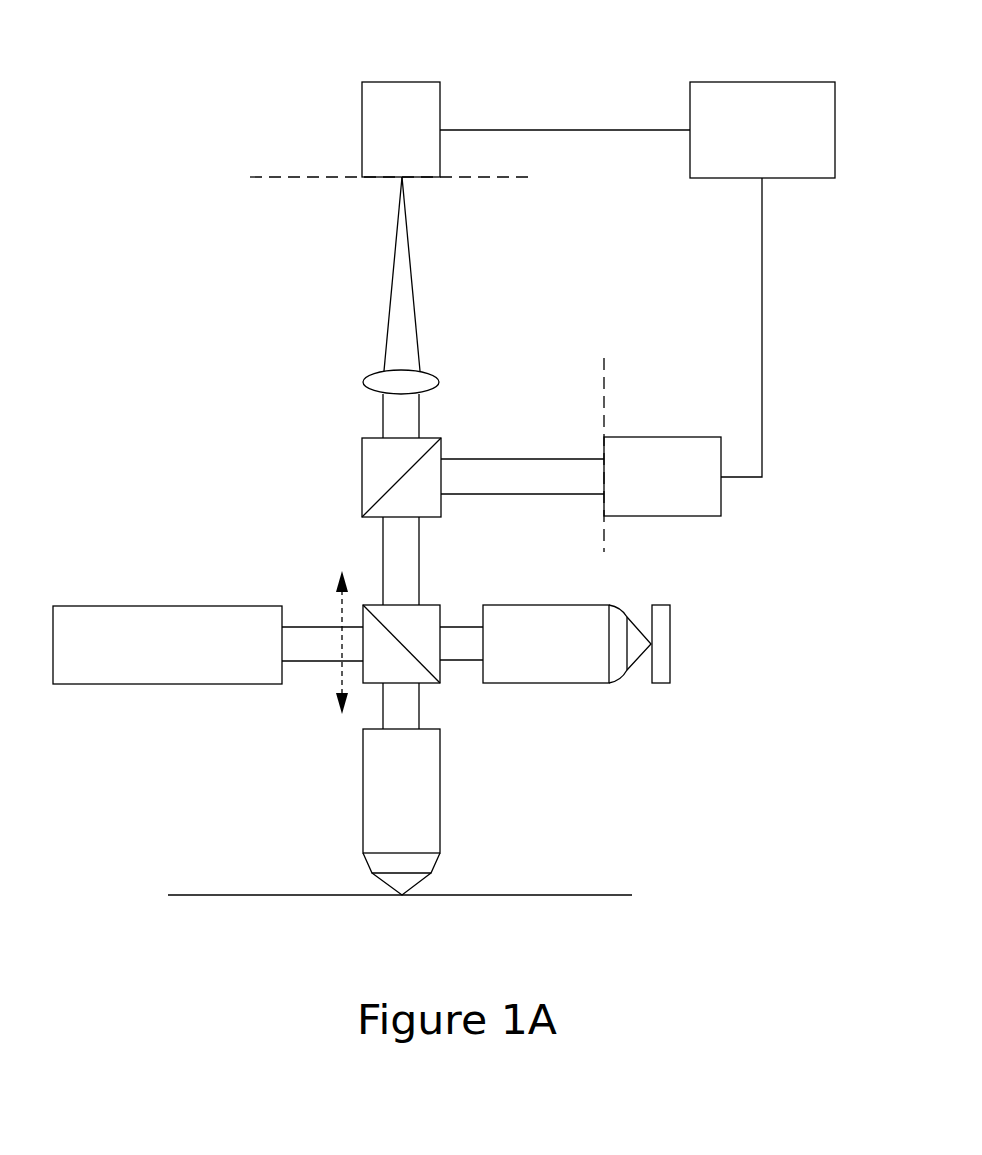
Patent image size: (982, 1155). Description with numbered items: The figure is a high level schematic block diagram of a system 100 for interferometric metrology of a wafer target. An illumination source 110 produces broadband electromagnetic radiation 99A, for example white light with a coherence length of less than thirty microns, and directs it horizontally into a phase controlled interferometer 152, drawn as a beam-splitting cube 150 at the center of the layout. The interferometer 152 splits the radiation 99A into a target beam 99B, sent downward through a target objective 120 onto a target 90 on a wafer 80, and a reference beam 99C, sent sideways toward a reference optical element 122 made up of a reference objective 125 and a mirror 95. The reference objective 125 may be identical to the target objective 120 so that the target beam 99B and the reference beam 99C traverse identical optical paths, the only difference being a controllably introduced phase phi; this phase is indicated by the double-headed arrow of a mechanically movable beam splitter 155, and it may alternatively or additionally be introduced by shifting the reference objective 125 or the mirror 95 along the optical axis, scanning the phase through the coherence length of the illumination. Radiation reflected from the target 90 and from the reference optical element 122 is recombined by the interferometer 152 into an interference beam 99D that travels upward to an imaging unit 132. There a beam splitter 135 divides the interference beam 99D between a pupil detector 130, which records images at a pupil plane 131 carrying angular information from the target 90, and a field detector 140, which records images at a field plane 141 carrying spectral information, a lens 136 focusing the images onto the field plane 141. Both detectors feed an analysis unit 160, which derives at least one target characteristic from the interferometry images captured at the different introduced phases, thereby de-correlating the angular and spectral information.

The system 100 is at (88, 62).
The illumination source 110 is at (122, 606).
The target objective 120 is at (363, 795).
The reference optical element 122 is at (645, 717).
The reference objective 125 is at (575, 605).
The pupil detector 130 is at (690, 437).
The pupil plane 131 is at (604, 378).
The imaging unit 132 is at (458, 191).
The beam splitter 135 is at (362, 460).
The lens 136 is at (378, 373).
The field detector 140 is at (362, 128).
The field plane 141 is at (270, 177).
The beam splitter 150 is at (440, 676).
The phase controlled interferometer 152 is at (509, 755).
The mechanically movable beam splitter 155 is at (336, 606).
The analysis unit 160 is at (762, 82).
The wafer 80 is at (210, 895).
The target 90 is at (401, 904).
The mirror 95 is at (660, 605).
The broadband electromagnetic radiation 99A is at (316, 650).
The target beam 99B is at (380, 715).
The reference beam 99C is at (453, 620).
The interference beam 99D is at (394, 550).